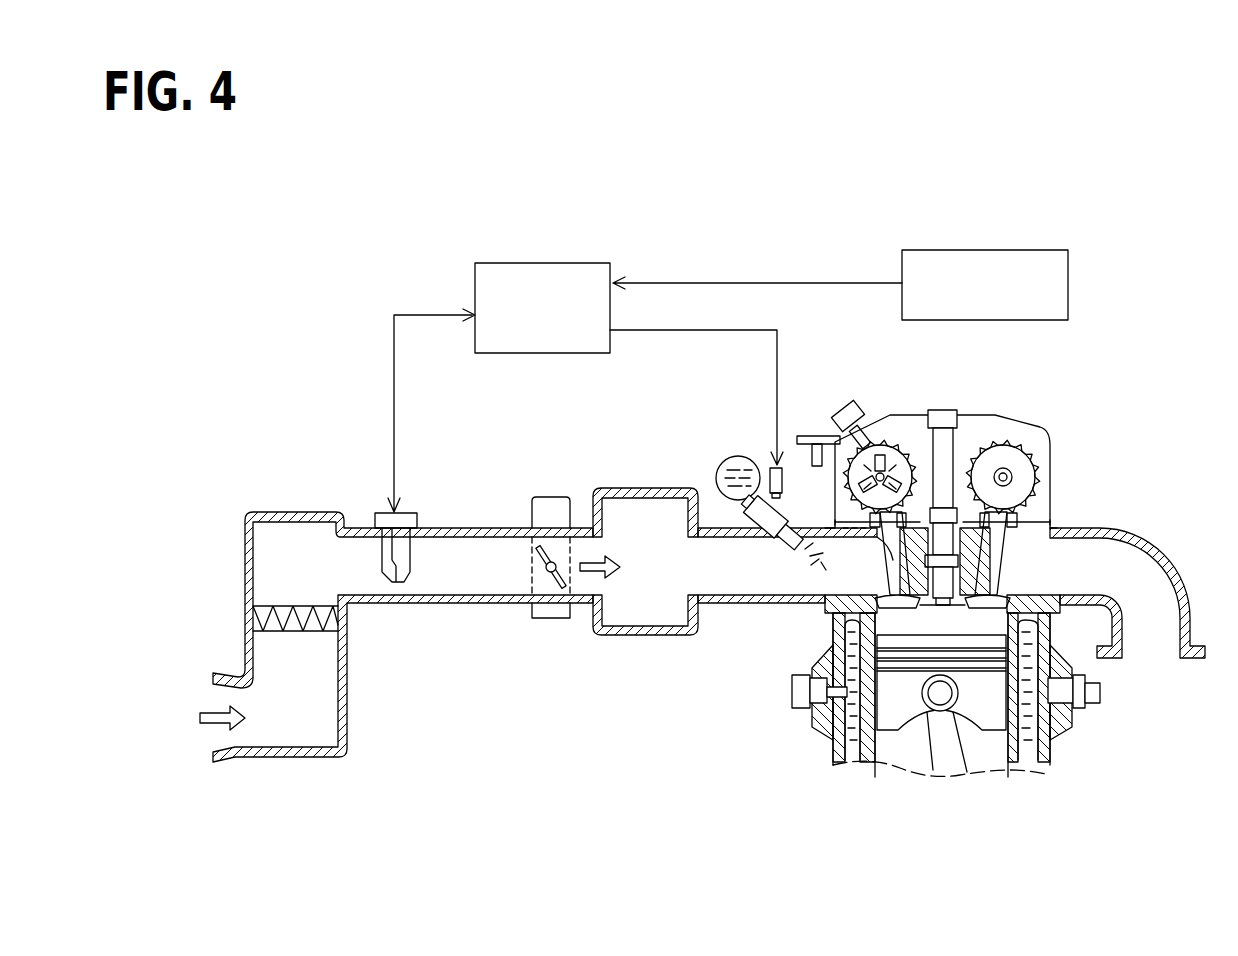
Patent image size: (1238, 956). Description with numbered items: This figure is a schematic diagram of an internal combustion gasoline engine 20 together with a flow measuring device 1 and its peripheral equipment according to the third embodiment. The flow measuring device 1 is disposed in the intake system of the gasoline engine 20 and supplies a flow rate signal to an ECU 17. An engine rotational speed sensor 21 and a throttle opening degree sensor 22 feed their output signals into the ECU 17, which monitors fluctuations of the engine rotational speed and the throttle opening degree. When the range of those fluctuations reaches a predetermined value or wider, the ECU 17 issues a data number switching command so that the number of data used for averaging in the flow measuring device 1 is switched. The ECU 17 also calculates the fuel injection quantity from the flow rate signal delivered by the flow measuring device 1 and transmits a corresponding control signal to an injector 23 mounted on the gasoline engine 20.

The flow measuring device 1 is at (354, 503).
The ECU 17 is at (550, 262).
The gasoline engine 20 is at (1069, 467).
The engine rotational speed sensor 21 is at (1022, 267).
The throttle opening degree sensor 22 is at (1033, 250).
The injector 23 is at (758, 520).